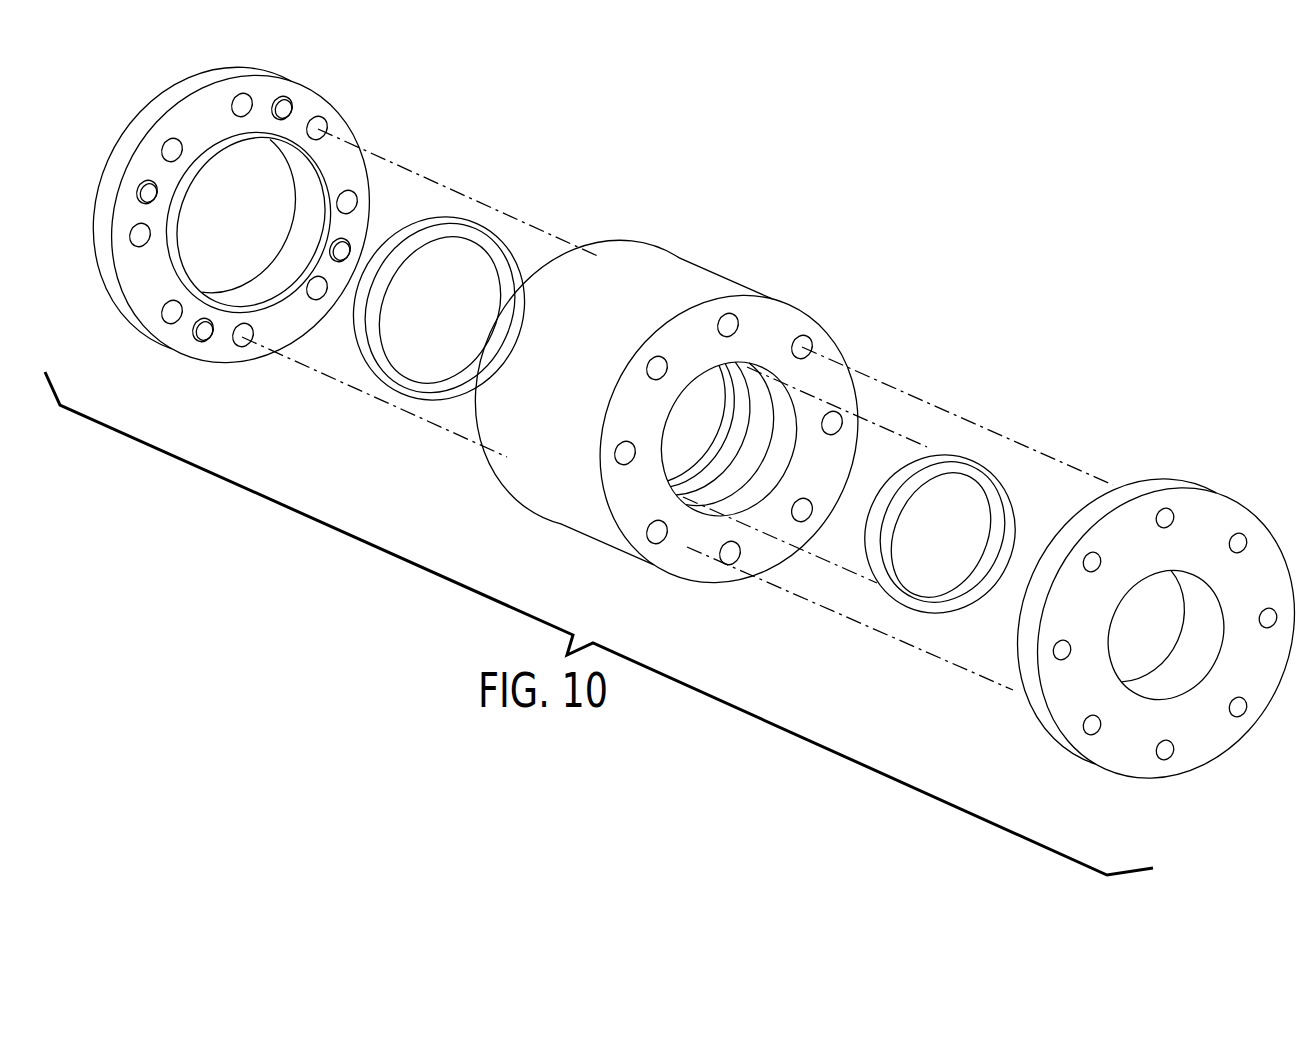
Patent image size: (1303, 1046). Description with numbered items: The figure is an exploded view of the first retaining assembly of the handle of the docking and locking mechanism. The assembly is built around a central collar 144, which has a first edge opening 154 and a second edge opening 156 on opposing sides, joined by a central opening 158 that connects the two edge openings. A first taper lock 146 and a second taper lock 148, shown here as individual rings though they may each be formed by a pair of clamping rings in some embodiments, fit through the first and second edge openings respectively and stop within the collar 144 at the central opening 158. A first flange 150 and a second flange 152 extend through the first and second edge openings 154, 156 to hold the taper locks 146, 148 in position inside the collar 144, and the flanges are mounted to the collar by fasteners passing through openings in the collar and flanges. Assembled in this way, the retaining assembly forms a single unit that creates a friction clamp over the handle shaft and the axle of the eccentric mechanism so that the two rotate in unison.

The central collar 144 is at (689, 417).
The first taper lock 146 is at (423, 223).
The second taper lock 148 is at (943, 453).
The first flange 150 is at (196, 82).
The second flange 152 is at (1152, 488).
The first edge opening 154 is at (582, 270).
The second edge opening 156 is at (762, 352).
The central opening 158 is at (733, 478).